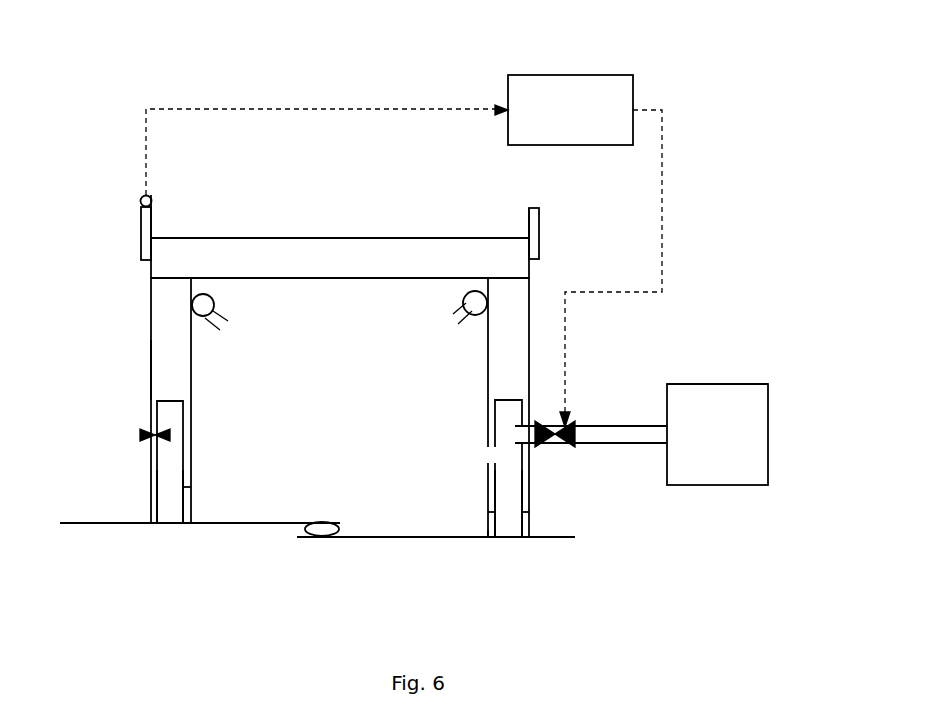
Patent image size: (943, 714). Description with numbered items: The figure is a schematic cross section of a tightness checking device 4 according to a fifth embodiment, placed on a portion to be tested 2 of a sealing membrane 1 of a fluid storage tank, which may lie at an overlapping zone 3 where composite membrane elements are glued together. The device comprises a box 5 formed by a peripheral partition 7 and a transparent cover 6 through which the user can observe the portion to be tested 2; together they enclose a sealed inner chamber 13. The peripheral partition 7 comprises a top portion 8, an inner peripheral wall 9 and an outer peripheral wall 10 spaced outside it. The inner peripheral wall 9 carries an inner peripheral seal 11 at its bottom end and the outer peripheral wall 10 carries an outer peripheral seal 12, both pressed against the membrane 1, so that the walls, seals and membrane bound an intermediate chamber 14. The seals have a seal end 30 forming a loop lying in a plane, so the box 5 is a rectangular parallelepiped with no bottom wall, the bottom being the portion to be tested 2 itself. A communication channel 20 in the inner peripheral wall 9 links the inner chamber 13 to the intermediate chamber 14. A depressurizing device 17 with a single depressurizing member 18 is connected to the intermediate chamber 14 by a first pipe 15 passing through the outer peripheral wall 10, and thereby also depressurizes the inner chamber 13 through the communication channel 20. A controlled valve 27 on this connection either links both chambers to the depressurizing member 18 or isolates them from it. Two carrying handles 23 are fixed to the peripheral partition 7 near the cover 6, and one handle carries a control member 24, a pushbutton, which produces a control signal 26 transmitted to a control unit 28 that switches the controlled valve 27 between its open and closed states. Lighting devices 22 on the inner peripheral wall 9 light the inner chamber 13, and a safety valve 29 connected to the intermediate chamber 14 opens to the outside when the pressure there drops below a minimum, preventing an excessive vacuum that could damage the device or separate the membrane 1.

The sealing membrane 1 is at (108, 527).
The portion to be tested 2 is at (247, 525).
The overlapping zone 3 is at (320, 531).
The tightness checking device 4 is at (682, 231).
The box 5 is at (151, 268).
The cover 6 is at (327, 262).
The peripheral partition 7 is at (157, 334).
The top portion 8 is at (170, 303).
The inner peripheral wall 9 is at (182, 455).
The outer peripheral wall 10 is at (150, 372).
The inner peripheral seal 11 is at (494, 540).
The outer peripheral seal 12 is at (525, 540).
The inner chamber 13 is at (350, 445).
The intermediate chamber 14 is at (168, 488).
The first pipe 15 is at (615, 422).
The depressurizing device 17 is at (762, 377).
The depressurizing member 18 is at (710, 384).
The communication channel 20 is at (490, 453).
The lighting devices 22 is at (209, 291).
The carrying handles 23 is at (539, 228).
The control member 24 is at (144, 194).
The control signal 26 is at (250, 108).
The controlled valve 27 is at (556, 442).
The control unit 28 is at (633, 85).
The safety valve 29 is at (140, 435).
The seal end 30 is at (492, 538).